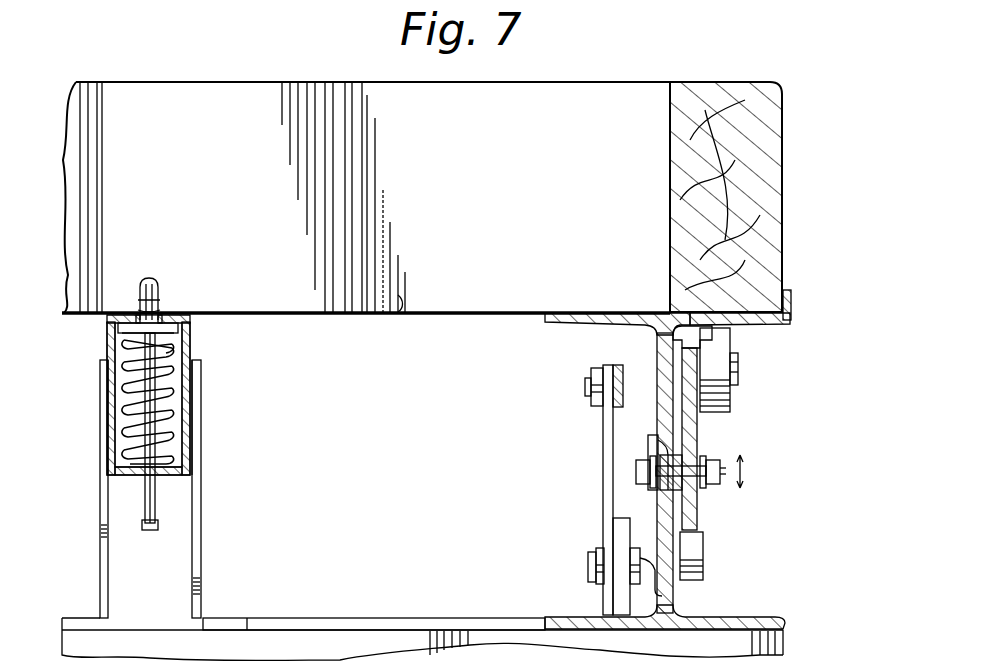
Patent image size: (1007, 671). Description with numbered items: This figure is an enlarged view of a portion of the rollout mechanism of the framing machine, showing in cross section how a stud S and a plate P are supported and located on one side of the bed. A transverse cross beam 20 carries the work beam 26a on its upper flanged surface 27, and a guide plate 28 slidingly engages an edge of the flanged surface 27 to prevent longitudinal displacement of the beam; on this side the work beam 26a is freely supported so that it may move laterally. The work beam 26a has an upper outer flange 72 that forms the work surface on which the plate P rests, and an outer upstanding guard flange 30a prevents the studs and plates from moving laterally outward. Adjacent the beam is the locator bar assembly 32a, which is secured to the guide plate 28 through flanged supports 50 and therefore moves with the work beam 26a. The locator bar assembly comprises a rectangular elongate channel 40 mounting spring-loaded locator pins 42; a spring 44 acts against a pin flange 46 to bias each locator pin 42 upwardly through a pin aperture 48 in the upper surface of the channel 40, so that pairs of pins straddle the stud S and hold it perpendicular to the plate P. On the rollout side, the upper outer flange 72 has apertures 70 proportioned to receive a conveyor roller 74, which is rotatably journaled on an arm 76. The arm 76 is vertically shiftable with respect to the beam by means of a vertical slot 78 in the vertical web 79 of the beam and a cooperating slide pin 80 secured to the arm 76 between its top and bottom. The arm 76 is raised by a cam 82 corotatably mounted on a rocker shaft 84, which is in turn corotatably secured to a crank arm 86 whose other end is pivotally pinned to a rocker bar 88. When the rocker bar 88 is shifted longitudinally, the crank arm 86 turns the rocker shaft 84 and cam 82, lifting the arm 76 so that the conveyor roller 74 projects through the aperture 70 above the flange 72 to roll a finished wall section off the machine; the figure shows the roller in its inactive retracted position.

The stud S is at (385, 318).
The plate P is at (783, 200).
The transverse cross beam 20 is at (770, 640).
The work beam 26a is at (570, 325).
The upper flanged surface 27 is at (745, 625).
The guide plate 28 is at (417, 600).
The guard flange 30a is at (793, 308).
The locator bar assembly 32a is at (205, 443).
The channel 40 is at (186, 398).
The locator pin 42 is at (140, 298).
The spring 44 is at (178, 355).
The pin flange 46 is at (190, 325).
The pin aperture 48 is at (150, 312).
The flanged support 50 is at (99, 552).
The aperture 70 is at (738, 330).
The upper outer flange 72 is at (778, 295).
The conveyor roller 74 is at (730, 398).
The arm 76 is at (698, 428).
The vertical slot 78 is at (648, 440).
The vertical web 79 is at (655, 343).
The slide pin 80 is at (700, 490).
The cam 82 is at (695, 558).
The rocker shaft 84 is at (672, 590).
The crank arm 86 is at (602, 480).
The rocker bar 88 is at (600, 400).